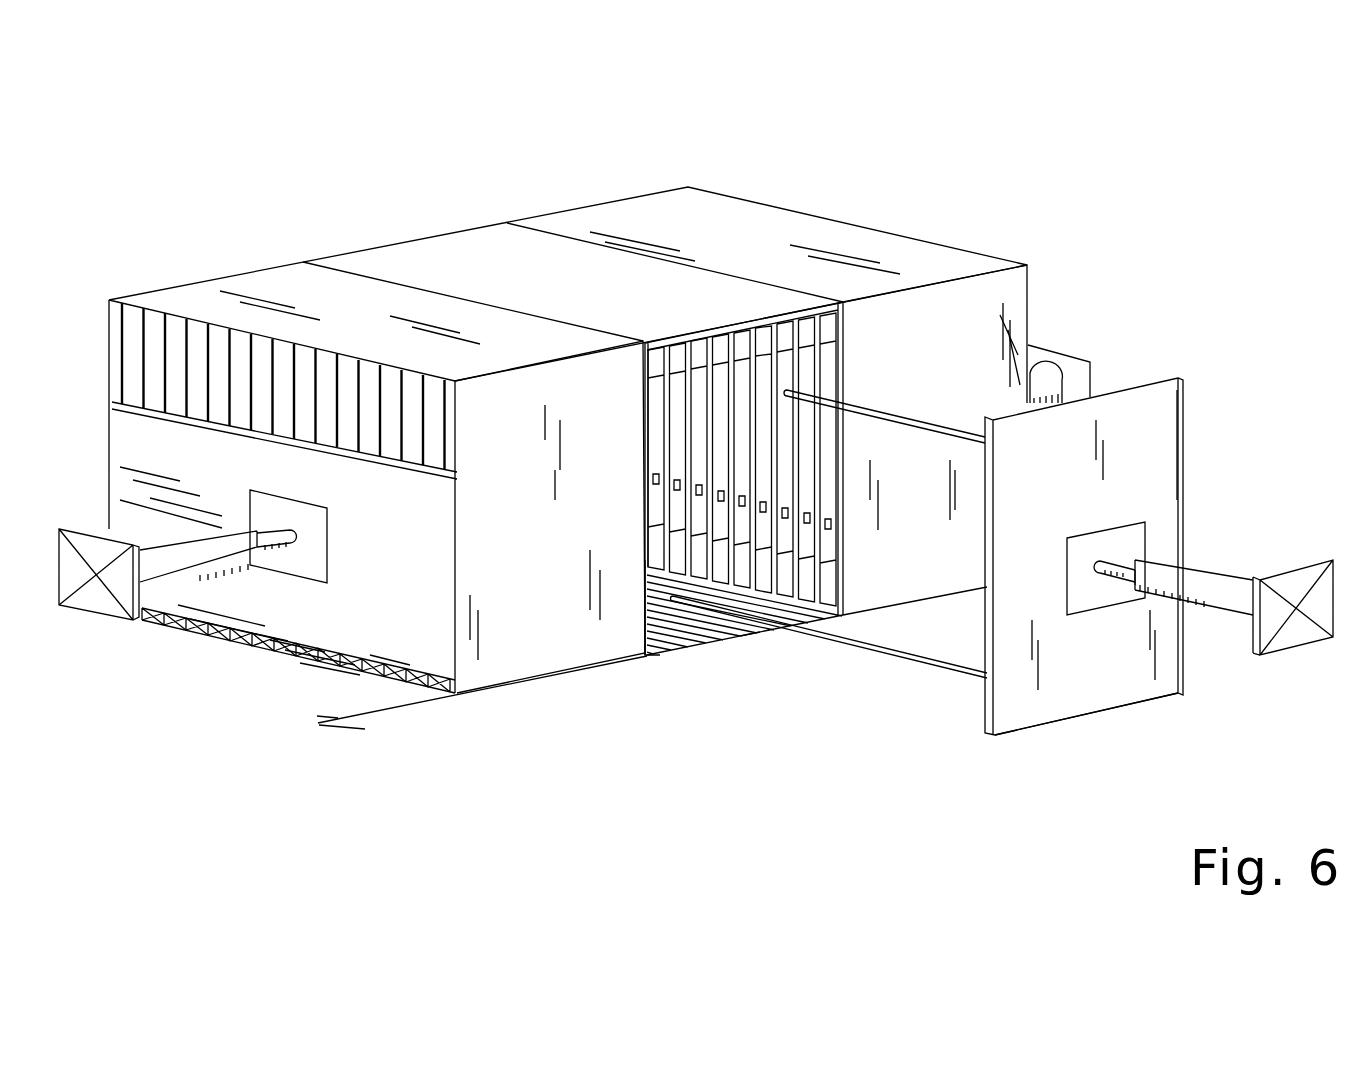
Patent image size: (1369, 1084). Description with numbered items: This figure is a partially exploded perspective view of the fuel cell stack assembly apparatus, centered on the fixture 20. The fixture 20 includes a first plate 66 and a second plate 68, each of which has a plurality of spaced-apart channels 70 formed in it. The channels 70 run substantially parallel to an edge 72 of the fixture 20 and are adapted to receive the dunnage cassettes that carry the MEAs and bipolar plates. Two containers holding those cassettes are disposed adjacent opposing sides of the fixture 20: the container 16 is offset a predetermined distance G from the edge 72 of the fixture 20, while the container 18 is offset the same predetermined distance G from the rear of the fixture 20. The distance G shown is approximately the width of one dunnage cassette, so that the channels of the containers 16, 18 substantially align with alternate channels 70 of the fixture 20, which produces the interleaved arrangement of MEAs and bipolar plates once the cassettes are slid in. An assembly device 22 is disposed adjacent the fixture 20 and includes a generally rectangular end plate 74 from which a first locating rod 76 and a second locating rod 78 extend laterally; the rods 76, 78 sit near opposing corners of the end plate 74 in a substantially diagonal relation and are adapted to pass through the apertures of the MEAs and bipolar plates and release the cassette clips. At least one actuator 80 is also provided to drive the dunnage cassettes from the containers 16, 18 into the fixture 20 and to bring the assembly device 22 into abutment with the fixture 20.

The container 16 is at (290, 296).
The fixture 20 is at (527, 263).
The container 18 is at (683, 226).
The second plate 68 is at (697, 297).
The first plate 66 is at (720, 642).
The edge 72 is at (660, 657).
The channels 70 is at (758, 637).
The first locating rod 76 is at (890, 408).
The second locating rod 78 is at (875, 650).
The end plate 74 is at (1173, 437).
The assembly device 22 is at (1103, 705).
The actuator 80 is at (75, 578).
The predetermined distance G is at (482, 706).